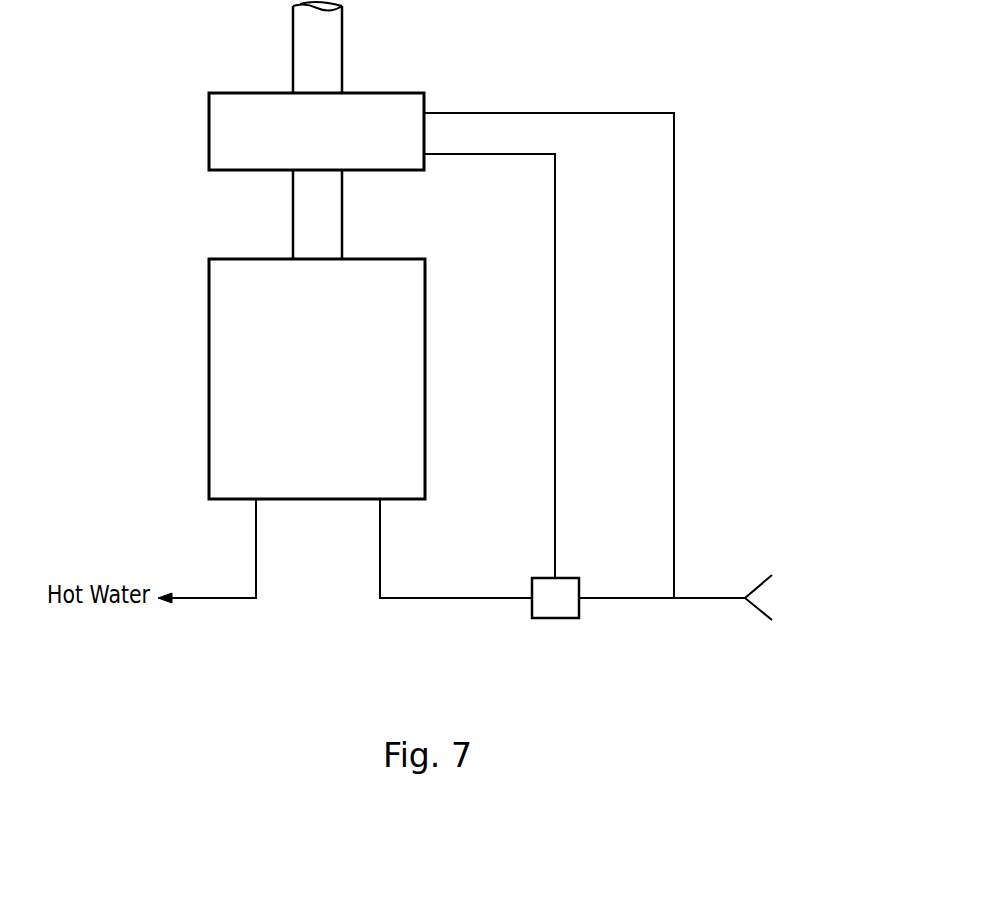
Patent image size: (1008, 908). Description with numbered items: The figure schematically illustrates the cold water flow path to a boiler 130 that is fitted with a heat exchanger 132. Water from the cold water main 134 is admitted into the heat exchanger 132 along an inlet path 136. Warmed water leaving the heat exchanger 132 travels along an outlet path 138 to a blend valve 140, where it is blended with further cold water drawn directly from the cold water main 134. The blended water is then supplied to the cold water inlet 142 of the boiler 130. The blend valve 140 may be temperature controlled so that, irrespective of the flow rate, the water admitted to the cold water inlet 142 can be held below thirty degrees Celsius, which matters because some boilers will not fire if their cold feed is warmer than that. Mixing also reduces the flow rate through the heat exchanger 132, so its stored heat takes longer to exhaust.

The boiler 130 is at (209, 370).
The heat exchanger 132 is at (209, 125).
The cold water main 134 is at (710, 598).
The inlet path 136 is at (475, 113).
The outlet path 138 is at (555, 327).
The blend valve 140 is at (553, 618).
The cold water inlet 142 is at (414, 598).